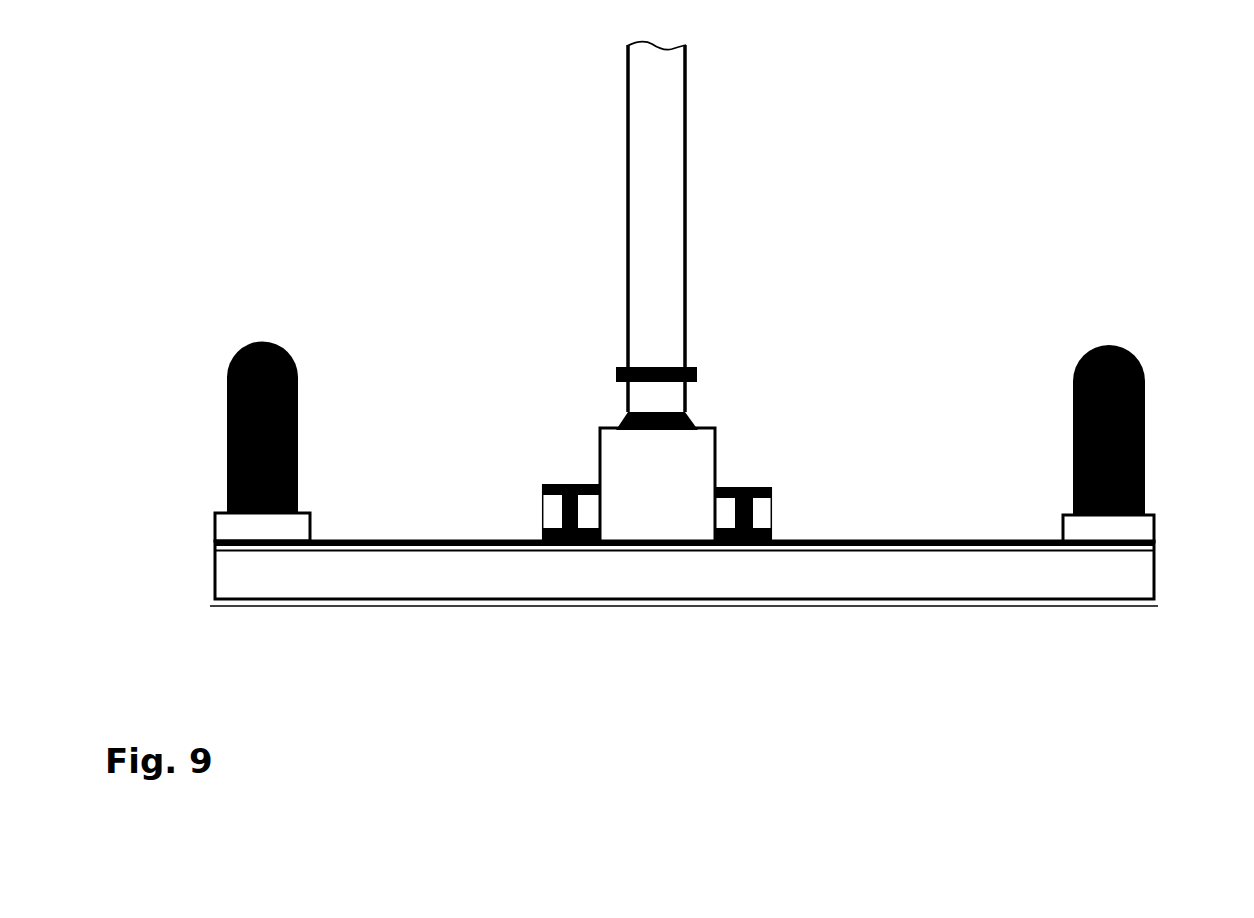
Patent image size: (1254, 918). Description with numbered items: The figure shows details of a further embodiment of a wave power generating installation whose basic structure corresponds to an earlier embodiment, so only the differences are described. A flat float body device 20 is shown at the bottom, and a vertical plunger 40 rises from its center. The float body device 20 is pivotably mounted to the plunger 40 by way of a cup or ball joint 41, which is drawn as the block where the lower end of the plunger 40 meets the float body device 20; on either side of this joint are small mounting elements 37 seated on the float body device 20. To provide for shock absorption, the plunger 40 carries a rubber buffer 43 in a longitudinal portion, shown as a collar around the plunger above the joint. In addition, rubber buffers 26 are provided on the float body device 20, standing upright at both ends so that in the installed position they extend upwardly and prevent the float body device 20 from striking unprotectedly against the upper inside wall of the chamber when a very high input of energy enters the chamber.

The float body device 20 is at (730, 580).
The rubber buffers 26 is at (228, 380).
The clamp 37 is at (543, 484).
The plunger 40 is at (667, 130).
The cup or ball joint 41 is at (680, 477).
The rubber buffer 43 is at (693, 370).